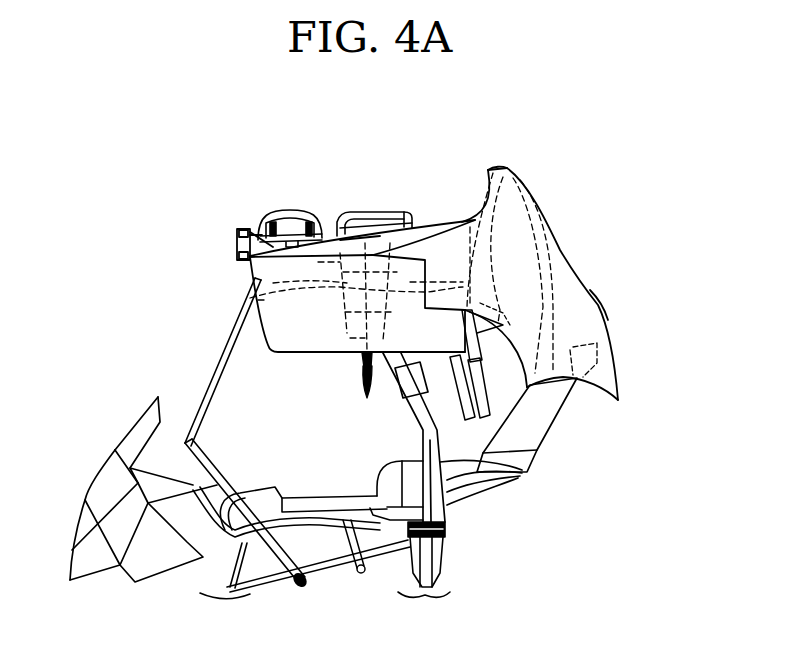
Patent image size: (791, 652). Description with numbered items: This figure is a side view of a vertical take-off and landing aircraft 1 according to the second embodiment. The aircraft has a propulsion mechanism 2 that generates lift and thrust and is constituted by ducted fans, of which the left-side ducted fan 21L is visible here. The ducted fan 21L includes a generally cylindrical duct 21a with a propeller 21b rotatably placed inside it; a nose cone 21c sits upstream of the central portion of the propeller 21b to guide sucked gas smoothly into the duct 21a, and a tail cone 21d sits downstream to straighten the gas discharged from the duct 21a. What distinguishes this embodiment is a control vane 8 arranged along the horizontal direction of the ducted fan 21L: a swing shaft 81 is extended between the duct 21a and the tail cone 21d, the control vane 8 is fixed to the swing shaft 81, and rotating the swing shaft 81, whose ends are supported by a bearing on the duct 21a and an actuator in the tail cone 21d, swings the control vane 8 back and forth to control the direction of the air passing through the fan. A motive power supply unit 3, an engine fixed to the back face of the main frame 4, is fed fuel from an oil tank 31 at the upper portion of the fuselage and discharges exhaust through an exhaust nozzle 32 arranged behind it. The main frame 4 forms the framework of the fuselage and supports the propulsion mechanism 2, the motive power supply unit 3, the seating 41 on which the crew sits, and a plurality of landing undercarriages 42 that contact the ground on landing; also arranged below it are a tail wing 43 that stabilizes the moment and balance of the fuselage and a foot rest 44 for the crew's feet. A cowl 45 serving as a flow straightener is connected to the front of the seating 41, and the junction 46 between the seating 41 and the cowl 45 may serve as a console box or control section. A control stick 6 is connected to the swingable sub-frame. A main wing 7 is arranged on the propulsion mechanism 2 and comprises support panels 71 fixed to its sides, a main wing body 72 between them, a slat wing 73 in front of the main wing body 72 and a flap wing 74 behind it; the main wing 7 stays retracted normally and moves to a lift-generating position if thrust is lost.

The vertical take-off and landing aircraft 1 is at (125, 240).
The propulsion mechanism 2 is at (310, 286).
The ducted fan 21L is at (259, 318).
The duct 21a is at (326, 240).
The propeller 21b is at (258, 298).
The nose cone 21c is at (340, 264).
The tail cone 21d is at (350, 340).
The motive power supply unit 3 is at (428, 213).
The oil tank 31 is at (379, 210).
The exhaust nozzle 32 is at (478, 408).
The main frame 4 is at (413, 420).
The seating 41 is at (300, 500).
The landing undercarriage 42 is at (230, 600).
The tail wing 43 is at (560, 420).
The foot rest 44 is at (363, 575).
The cowl 45 is at (132, 418).
The junction 46 is at (176, 472).
The control stick 6 is at (208, 372).
The main wing 7 is at (575, 205).
The support panel 71 is at (598, 304).
The main wing body 72 is at (548, 247).
The slat wing 73 is at (500, 168).
The flap wing 74 is at (545, 364).
The control vane 8 is at (362, 397).
The swing shaft 81 is at (360, 358).